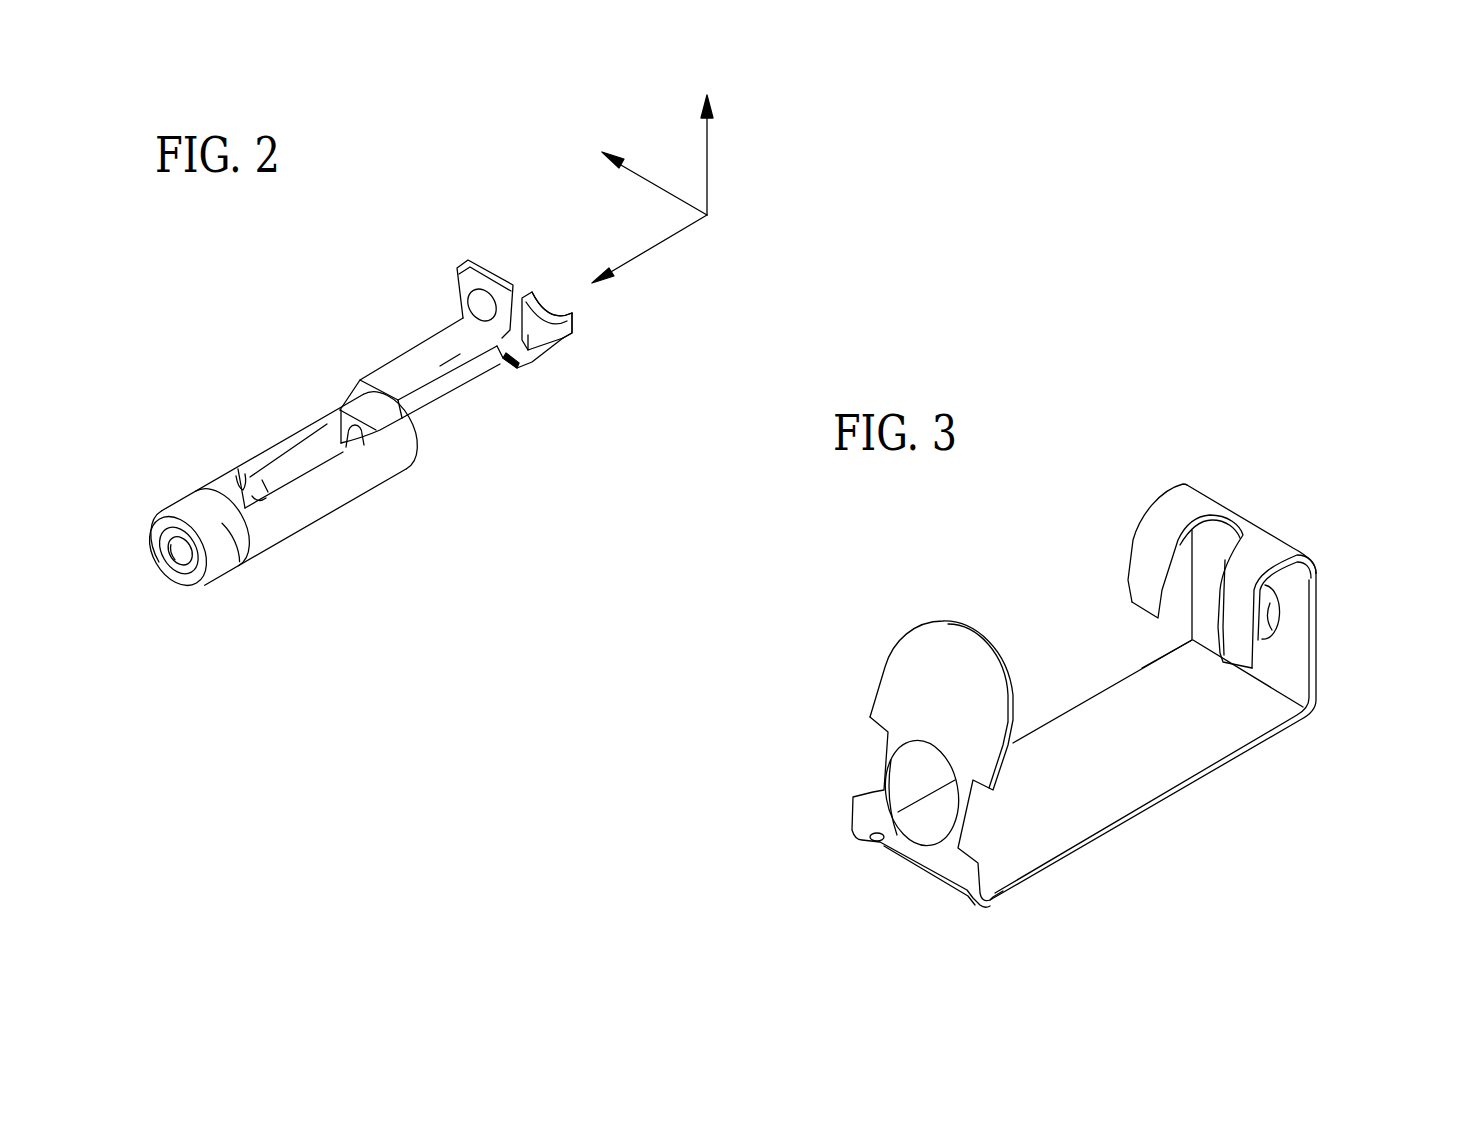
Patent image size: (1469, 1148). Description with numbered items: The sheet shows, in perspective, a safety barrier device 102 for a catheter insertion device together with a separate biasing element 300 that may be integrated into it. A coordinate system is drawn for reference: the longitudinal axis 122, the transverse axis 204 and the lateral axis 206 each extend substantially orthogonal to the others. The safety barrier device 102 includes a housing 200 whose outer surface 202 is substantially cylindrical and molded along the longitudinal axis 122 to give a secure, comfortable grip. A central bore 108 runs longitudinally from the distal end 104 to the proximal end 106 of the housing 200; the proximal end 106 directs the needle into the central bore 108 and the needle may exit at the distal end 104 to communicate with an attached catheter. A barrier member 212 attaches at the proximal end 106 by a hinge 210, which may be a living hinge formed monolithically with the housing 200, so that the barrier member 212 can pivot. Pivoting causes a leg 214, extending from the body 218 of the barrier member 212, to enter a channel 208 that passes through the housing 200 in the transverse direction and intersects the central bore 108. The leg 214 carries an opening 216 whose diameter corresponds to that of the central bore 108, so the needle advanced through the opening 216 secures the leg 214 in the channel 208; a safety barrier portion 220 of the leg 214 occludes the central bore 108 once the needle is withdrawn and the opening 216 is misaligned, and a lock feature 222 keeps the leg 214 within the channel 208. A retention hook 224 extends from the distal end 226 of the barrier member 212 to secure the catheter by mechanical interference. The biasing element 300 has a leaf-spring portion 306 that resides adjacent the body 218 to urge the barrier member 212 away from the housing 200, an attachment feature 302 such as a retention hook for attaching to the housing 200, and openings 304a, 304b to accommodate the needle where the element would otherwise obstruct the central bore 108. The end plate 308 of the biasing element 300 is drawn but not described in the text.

In FIG. 2, the safety barrier device 102 is at (250, 287).
In FIG. 2, the distal end 104 is at (190, 504).
In FIG. 2, the central bore 108 is at (173, 558).
In FIG. 2, the housing 200 is at (312, 530).
In FIG. 2, the outer surface 202 is at (362, 483).
In FIG. 2, the channel 208 is at (238, 487).
In FIG. 2, the hinge 210 is at (360, 393).
In FIG. 2, the barrier member 212 is at (392, 357).
In FIG. 2, the proximal end 106 is at (405, 432).
In FIG. 2, the body 218 is at (455, 348).
In FIG. 2, the leg 214 is at (518, 328).
In FIG. 2, the opening 216 is at (477, 312).
In FIG. 2, the safety barrier portion 220 is at (477, 268).
In FIG. 2, the lock feature 222 is at (515, 288).
In FIG. 2, the retention hook 224 is at (540, 292).
In FIG. 2, the distal end 226 is at (578, 340).
In FIG. 2, the transverse axis 204 is at (708, 168).
In FIG. 2, the lateral axis 206 is at (663, 187).
In FIG. 2, the longitudinal axis 122 is at (653, 253).
In FIG. 3, the biasing element 300 is at (962, 560).
In FIG. 3, the attachment feature 302 is at (1187, 500).
In FIG. 3, the opening 304a is at (1280, 628).
In FIG. 3, the opening 304b is at (906, 786).
In FIG. 3, the leaf-spring portion 306 is at (1115, 762).
In FIG. 3, the end plate 308 is at (920, 673).